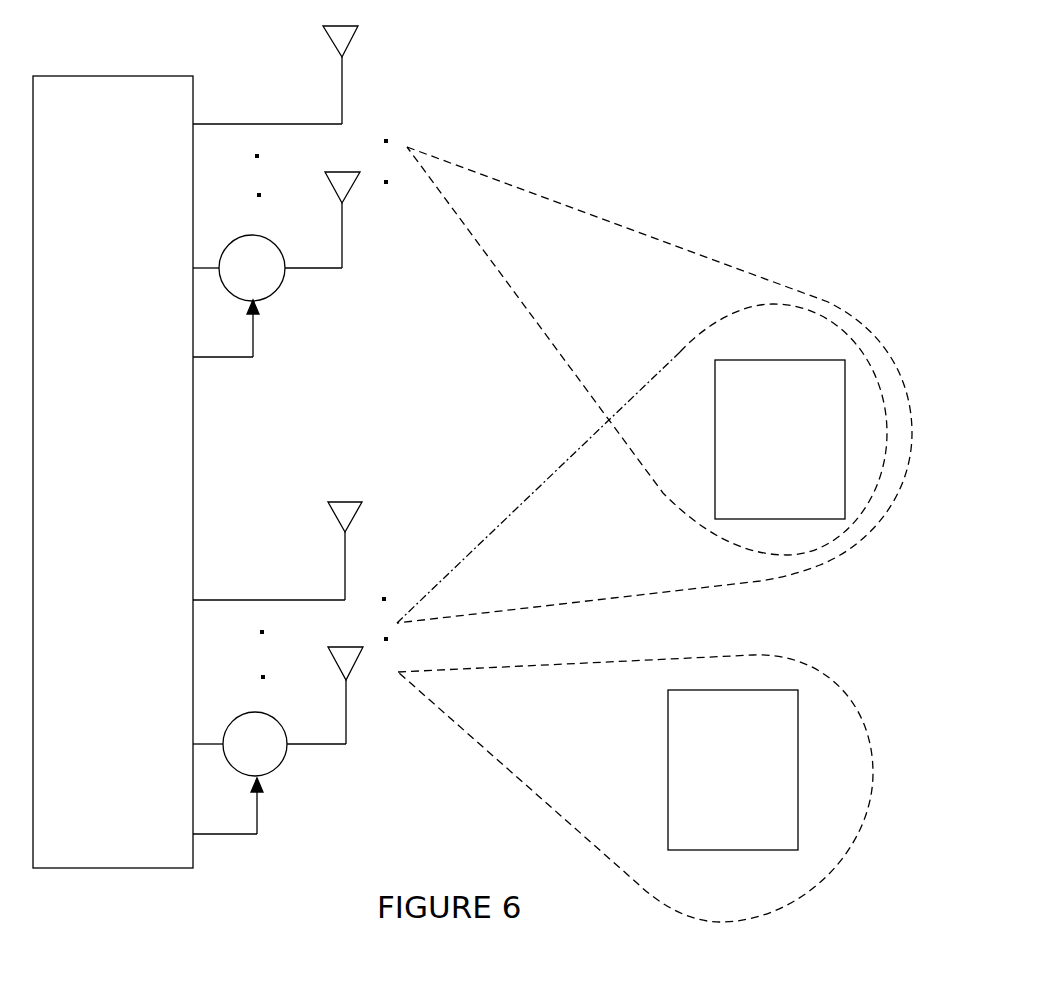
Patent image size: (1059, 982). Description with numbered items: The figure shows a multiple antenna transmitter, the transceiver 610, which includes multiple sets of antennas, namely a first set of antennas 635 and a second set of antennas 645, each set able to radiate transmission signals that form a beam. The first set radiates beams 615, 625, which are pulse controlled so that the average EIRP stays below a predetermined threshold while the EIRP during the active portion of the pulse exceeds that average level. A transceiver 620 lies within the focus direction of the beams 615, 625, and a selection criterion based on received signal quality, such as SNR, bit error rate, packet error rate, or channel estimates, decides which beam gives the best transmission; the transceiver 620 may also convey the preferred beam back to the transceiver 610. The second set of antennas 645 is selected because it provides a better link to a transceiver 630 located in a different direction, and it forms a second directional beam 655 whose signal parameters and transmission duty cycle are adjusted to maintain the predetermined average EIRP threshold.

The transceiver 610 is at (96, 507).
The beam 615 is at (606, 245).
The transceiver 620 is at (761, 476).
The beam 625 is at (523, 520).
The transceiver 630 is at (714, 806).
The first set of antennas 635 is at (340, 305).
The second set of antennas 645 is at (360, 760).
The second directional beam 655 is at (628, 678).